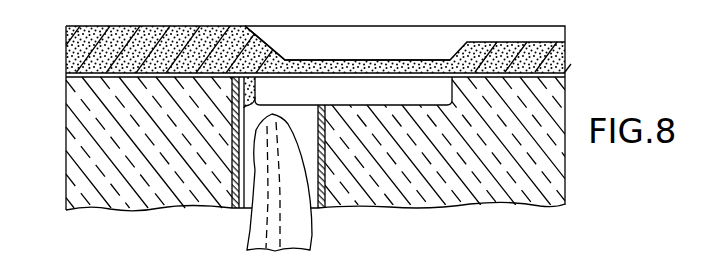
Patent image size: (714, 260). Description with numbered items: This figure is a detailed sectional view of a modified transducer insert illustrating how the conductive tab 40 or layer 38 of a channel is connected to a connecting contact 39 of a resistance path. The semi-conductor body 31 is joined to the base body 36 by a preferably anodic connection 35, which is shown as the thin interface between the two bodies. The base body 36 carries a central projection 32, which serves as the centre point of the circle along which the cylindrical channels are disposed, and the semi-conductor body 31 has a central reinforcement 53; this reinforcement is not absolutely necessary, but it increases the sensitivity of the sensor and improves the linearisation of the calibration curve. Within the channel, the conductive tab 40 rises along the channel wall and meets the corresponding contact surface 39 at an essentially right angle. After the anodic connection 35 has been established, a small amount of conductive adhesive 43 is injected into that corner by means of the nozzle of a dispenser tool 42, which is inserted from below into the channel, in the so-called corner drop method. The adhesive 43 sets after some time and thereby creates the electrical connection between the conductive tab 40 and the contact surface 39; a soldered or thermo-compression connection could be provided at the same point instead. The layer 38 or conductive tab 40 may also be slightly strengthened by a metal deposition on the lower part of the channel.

The semi-conductor body 31 is at (85, 52).
The central projection 32 is at (536, 82).
The anodic connection 35 is at (115, 78).
The base body 36 is at (100, 145).
The layer 38 is at (326, 170).
The connecting contact 39 is at (280, 65).
The conductive tab 40 is at (245, 105).
The dispenser tool 42 is at (255, 233).
The conductive adhesive 43 is at (257, 88).
The central reinforcement 53 is at (555, 48).